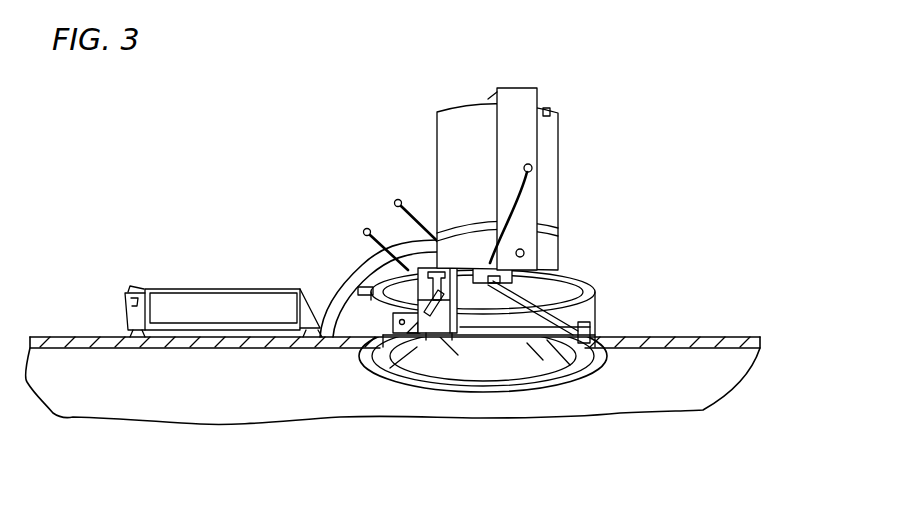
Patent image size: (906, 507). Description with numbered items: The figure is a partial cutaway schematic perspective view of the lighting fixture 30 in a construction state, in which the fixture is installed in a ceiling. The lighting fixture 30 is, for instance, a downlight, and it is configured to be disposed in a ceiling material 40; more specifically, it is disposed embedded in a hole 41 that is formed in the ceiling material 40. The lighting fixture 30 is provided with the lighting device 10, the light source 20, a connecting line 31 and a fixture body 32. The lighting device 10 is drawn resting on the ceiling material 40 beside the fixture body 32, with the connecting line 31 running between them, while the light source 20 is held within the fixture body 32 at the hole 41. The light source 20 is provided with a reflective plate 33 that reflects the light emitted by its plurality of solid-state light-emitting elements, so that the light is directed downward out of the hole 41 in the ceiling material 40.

The lighting device 10 is at (245, 302).
The light source 20 is at (470, 265).
The lighting fixture 30 is at (397, 212).
The connecting line 31 is at (352, 282).
The fixture body 32 is at (441, 163).
The reflective plate 33 is at (448, 370).
The ceiling material 40 is at (393, 390).
The hole 41 is at (590, 326).